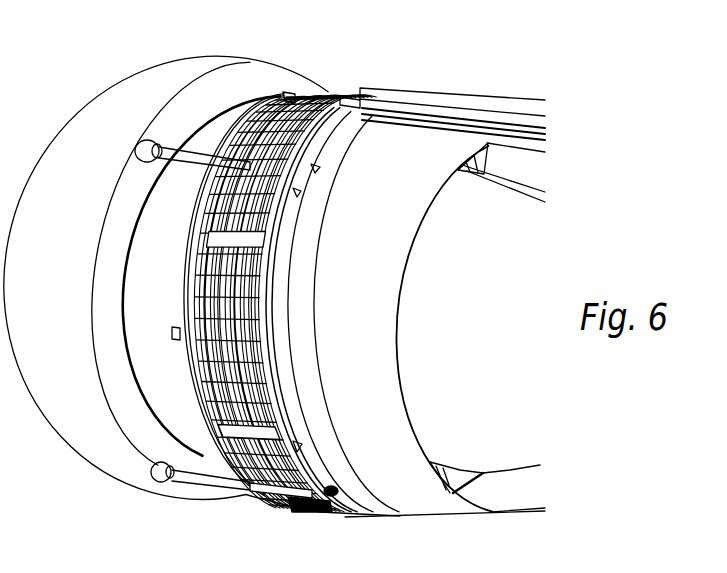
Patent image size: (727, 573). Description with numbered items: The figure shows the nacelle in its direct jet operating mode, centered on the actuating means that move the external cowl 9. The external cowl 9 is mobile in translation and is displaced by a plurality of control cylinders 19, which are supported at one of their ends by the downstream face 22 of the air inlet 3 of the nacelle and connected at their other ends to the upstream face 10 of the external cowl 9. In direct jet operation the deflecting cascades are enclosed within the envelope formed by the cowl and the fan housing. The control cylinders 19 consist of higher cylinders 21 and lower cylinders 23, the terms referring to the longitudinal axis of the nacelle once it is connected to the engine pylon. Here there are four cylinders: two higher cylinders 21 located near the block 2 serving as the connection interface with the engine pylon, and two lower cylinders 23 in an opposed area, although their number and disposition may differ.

The block 2 is at (462, 97).
The air inlet 3 is at (116, 116).
The external cowl 9 is at (422, 493).
The upstream face 10 is at (318, 456).
The control cylinders 19 is at (172, 157).
The higher cylinders 21 is at (218, 157).
The downstream face 22 is at (275, 82).
The lower cylinders 23 is at (218, 480).